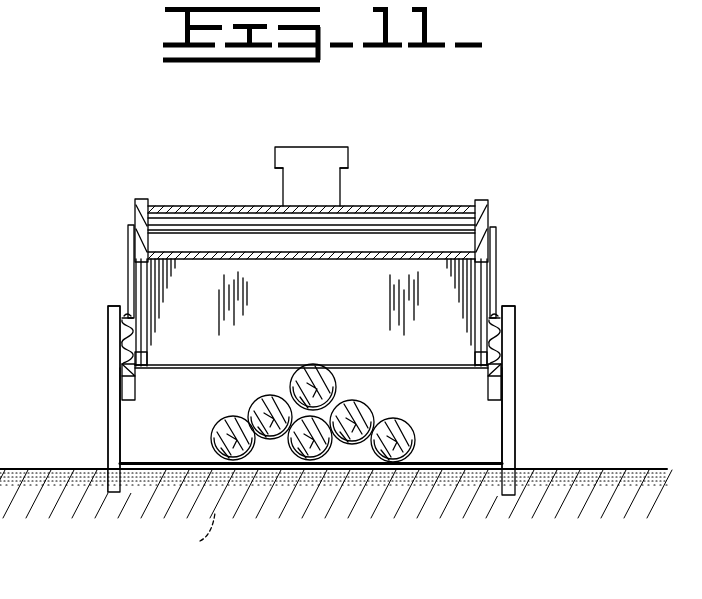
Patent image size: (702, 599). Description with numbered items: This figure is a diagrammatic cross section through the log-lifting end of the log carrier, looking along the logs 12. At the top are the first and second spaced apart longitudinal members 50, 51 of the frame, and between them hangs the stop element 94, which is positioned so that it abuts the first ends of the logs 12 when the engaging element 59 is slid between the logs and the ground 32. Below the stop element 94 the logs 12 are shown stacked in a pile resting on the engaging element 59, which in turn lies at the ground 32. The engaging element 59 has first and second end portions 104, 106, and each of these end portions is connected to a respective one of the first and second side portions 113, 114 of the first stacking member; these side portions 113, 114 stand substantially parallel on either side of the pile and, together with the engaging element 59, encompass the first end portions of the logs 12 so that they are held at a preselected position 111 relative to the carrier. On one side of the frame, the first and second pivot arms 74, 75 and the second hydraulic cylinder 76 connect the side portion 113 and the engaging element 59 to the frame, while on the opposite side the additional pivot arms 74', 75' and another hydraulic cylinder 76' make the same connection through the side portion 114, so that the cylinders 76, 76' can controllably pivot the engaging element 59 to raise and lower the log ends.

The first longitudinal member 50 is at (135, 228).
The second longitudinal member 51 is at (490, 216).
The first pivot arm 74 is at (94, 270).
The additional pivot arm 74' is at (522, 271).
The second hydraulic cylinder 76 is at (89, 339).
The another hydraulic cylinder 76' is at (529, 339).
The second pivot arm 75 is at (88, 382).
The additional pivot arm 75' is at (529, 383).
The stop element 94 is at (330, 312).
The log 12 is at (311, 414).
The preselected position 111 is at (465, 422).
The first side portion 113 is at (108, 437).
The second side portion 114 is at (517, 452).
The first end portion of engaging element 104 is at (135, 503).
The second end portion of engaging element 106 is at (486, 503).
The engaging element 59 is at (182, 536).
The ground 32 is at (322, 552).